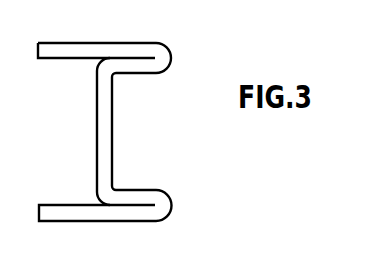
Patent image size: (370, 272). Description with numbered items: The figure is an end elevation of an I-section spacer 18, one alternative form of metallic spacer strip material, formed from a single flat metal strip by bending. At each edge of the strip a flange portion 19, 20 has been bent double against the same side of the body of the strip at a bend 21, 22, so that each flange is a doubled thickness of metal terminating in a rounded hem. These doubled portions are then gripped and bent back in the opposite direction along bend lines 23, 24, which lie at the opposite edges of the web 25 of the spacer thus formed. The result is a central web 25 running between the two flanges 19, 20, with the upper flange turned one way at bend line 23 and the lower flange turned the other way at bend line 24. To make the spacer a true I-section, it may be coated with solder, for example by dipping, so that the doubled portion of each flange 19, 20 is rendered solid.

The I-section spacer 18 is at (130, 136).
The flange portion 19 is at (90, 50).
The flange portion 20 is at (90, 215).
The bend 21 is at (173, 56).
The bend 22 is at (173, 204).
The bend line 23 is at (110, 72).
The bend line 24 is at (113, 189).
The web 25 is at (102, 102).